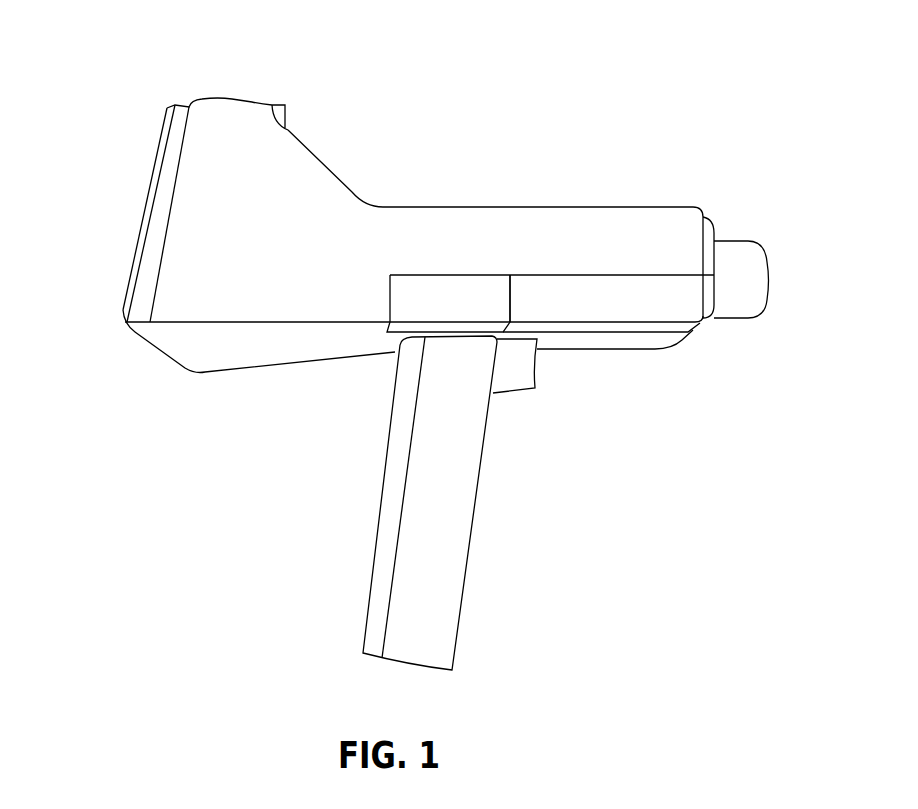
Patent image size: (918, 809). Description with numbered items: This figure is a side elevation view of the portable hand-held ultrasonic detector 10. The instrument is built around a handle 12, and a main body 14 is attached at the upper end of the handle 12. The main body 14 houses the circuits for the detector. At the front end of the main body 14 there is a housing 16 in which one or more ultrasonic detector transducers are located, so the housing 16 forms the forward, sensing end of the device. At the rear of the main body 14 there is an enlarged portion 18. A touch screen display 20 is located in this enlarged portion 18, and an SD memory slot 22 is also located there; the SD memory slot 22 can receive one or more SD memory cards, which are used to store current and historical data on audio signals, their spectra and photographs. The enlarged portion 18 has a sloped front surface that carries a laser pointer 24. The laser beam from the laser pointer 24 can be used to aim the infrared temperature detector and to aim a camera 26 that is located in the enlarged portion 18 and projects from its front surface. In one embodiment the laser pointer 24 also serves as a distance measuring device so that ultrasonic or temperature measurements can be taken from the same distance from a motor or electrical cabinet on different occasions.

The portable hand-held ultrasonic detector 10 is at (491, 80).
The handle 12 is at (478, 475).
The main body 14 is at (508, 206).
The housing 16 is at (742, 240).
The enlarged portion 18 is at (192, 102).
The touch screen display 20 is at (150, 190).
The SD memory slot 22 is at (157, 157).
The laser pointer 24 is at (335, 175).
The camera 26 is at (287, 115).